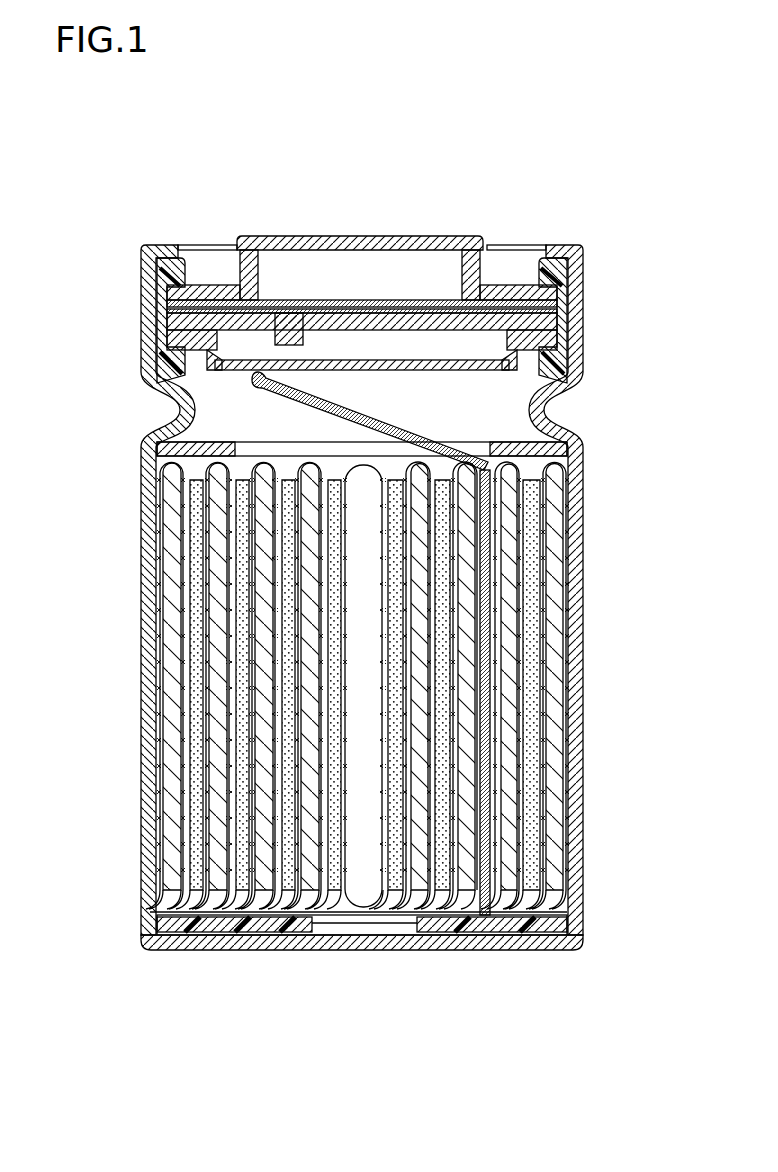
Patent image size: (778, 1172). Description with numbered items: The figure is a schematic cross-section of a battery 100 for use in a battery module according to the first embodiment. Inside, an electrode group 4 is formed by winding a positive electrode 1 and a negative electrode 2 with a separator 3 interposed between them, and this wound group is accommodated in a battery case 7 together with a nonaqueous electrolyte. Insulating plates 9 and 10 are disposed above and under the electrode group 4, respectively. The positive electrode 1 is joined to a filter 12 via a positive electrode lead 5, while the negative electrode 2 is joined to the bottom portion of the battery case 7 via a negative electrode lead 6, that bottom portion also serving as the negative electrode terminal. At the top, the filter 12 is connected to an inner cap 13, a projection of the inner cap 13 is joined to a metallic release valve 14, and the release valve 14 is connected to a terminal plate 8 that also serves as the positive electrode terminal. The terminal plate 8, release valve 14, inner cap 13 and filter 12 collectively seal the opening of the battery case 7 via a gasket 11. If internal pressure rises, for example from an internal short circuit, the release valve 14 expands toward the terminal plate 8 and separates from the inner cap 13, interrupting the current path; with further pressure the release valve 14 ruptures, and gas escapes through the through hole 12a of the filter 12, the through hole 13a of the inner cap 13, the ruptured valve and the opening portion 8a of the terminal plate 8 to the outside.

The battery 100 is at (592, 100).
The positive electrode 1 is at (530, 752).
The negative electrode 2 is at (553, 775).
The separator 3 is at (543, 810).
The electrode group 4 is at (414, 687).
The positive electrode lead 5 is at (393, 434).
The negative electrode lead 6 is at (257, 933).
The battery case 7 is at (578, 700).
The terminal plate 8 is at (330, 237).
The opening portion 8a is at (478, 250).
The insulating plate 9 is at (533, 447).
The insulating plate 10 is at (462, 923).
The gasket 11 is at (560, 362).
The filter 12 is at (480, 322).
The through hole 12a is at (343, 366).
The inner cap 13 is at (490, 307).
The through hole 13a is at (268, 330).
The release valve 14 is at (445, 303).